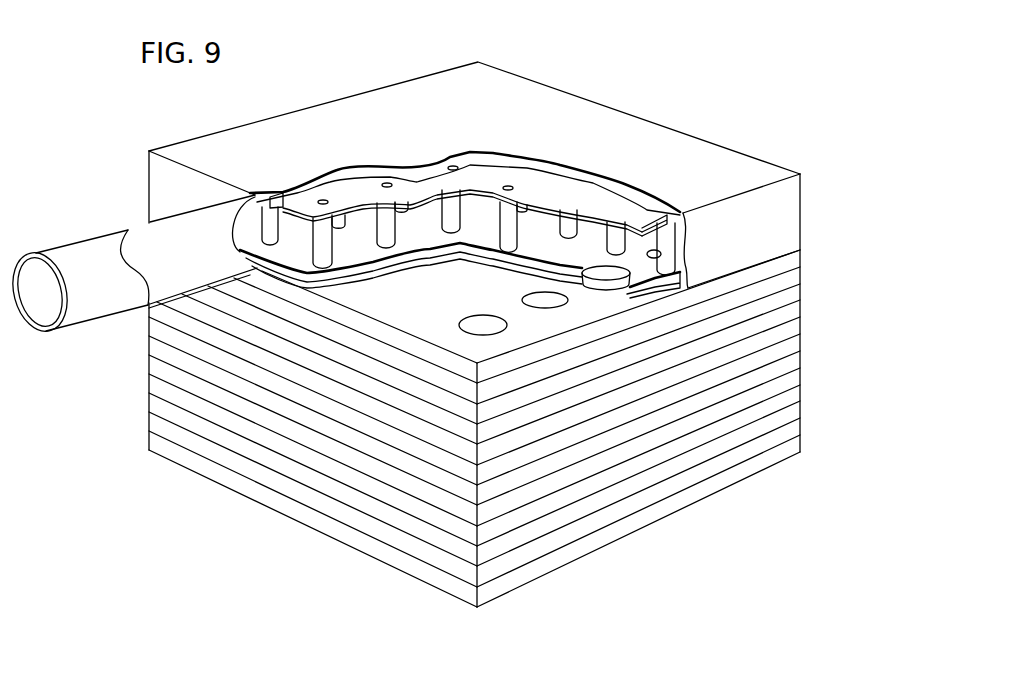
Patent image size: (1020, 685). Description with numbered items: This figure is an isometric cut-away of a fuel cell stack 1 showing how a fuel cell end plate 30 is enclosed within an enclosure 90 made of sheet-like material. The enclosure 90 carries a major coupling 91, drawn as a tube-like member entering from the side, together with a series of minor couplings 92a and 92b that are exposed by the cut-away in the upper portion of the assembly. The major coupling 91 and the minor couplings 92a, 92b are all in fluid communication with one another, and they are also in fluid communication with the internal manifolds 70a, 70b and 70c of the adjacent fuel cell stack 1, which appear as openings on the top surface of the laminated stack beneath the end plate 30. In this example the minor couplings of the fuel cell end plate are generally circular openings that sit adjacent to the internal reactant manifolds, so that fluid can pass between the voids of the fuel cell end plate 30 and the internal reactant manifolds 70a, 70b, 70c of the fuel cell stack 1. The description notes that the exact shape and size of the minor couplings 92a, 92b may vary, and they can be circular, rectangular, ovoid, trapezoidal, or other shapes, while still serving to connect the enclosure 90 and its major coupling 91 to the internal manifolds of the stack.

The fuel cell stack 1 is at (744, 116).
The fuel cell end plate 30 is at (185, 140).
The enclosure 90 is at (740, 228).
The major coupling 91 is at (43, 333).
The minor coupling 92a is at (600, 257).
The minor coupling 92b is at (583, 267).
The internal manifold 70a is at (497, 333).
The internal manifold 70b is at (560, 308).
The internal manifold 70c is at (603, 300).